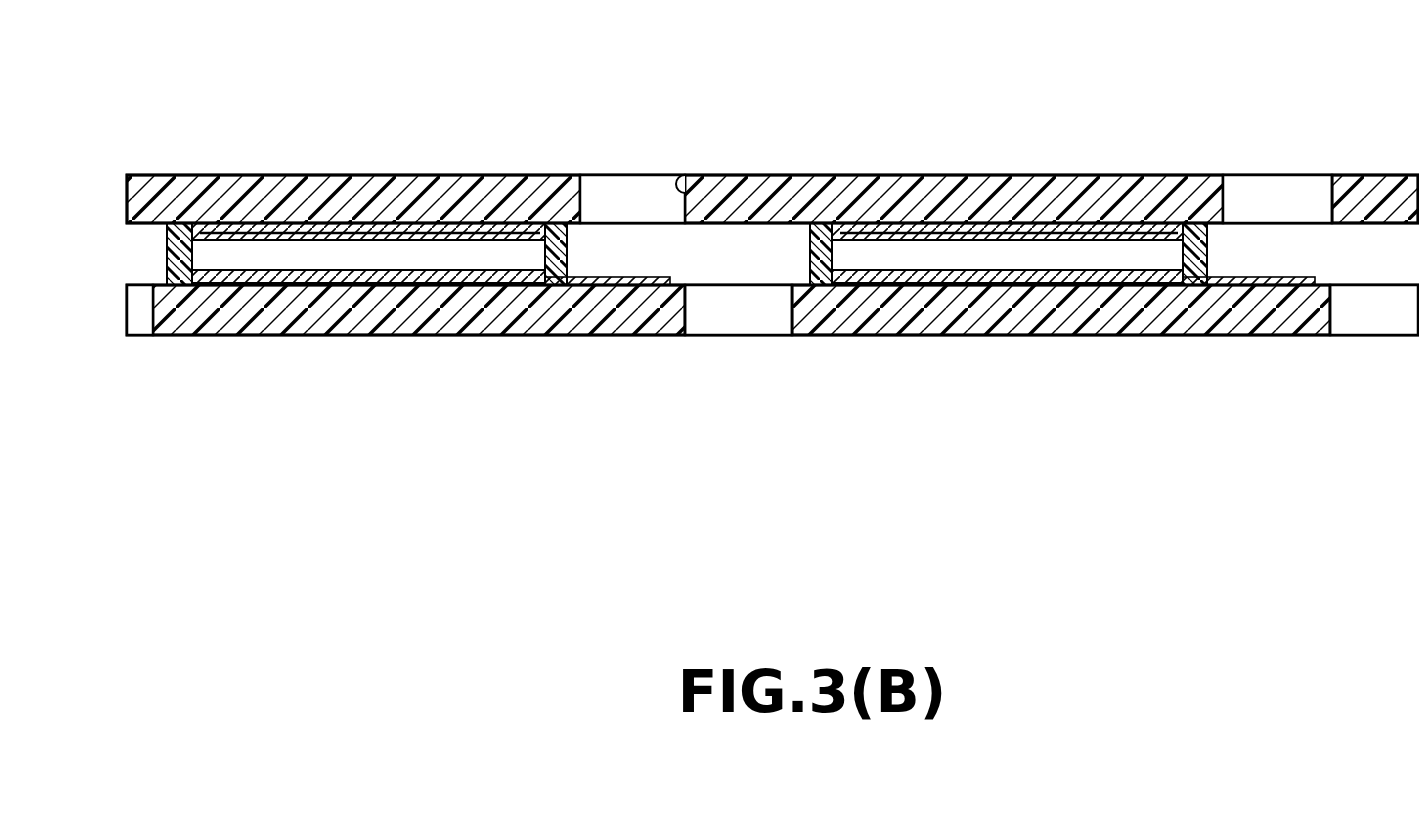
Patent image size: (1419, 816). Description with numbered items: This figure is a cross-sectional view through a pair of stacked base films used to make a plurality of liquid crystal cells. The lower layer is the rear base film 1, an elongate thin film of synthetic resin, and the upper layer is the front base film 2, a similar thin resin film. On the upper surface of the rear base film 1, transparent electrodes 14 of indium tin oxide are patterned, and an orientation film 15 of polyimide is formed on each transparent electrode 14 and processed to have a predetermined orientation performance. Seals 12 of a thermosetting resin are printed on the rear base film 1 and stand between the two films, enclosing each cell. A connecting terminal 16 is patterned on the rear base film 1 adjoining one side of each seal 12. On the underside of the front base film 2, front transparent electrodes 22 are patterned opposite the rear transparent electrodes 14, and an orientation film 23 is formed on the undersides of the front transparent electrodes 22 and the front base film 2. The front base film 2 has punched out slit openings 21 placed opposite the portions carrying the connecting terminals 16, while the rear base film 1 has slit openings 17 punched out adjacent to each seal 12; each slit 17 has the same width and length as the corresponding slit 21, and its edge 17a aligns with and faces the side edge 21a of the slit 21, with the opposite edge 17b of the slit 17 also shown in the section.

The rear base film 1 is at (243, 338).
The front base film 2 is at (232, 175).
The seal 12 is at (178, 290).
The transparent electrode 14 is at (303, 288).
The orientation film 15 is at (412, 278).
The connecting terminal 16 is at (615, 283).
The slit opening 17 is at (735, 313).
The lower edge of slit 17a is at (690, 303).
The inner end face of support member 17b is at (790, 300).
The slit opening 21 is at (608, 190).
The upper side edge of slit 21a is at (677, 178).
The front transparent electrode 22 is at (325, 225).
The orientation film 23 is at (452, 228).